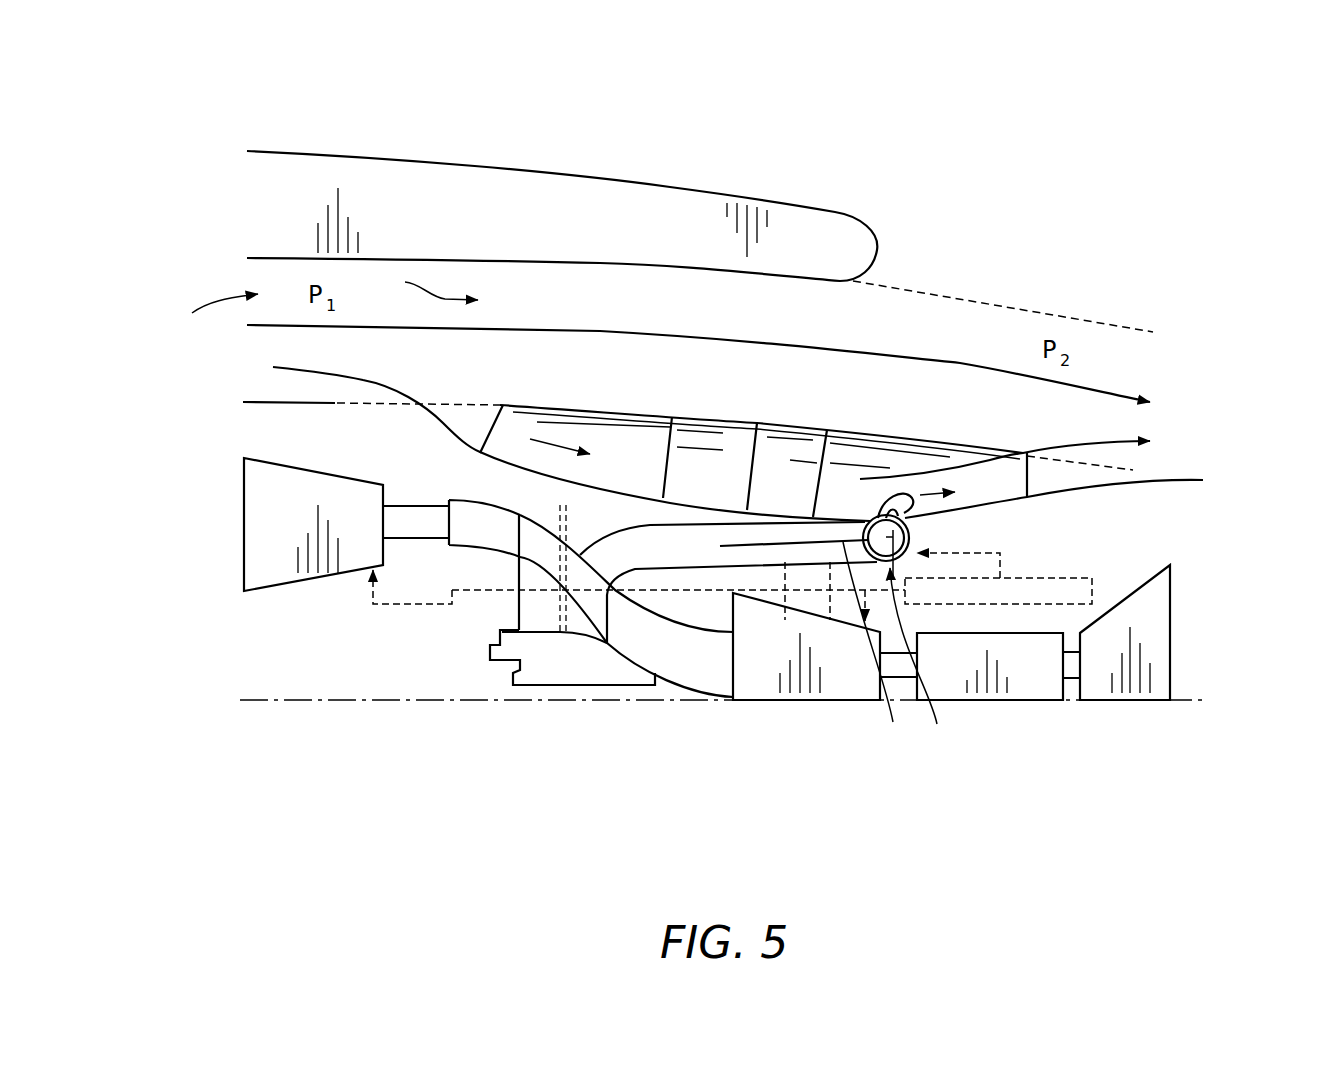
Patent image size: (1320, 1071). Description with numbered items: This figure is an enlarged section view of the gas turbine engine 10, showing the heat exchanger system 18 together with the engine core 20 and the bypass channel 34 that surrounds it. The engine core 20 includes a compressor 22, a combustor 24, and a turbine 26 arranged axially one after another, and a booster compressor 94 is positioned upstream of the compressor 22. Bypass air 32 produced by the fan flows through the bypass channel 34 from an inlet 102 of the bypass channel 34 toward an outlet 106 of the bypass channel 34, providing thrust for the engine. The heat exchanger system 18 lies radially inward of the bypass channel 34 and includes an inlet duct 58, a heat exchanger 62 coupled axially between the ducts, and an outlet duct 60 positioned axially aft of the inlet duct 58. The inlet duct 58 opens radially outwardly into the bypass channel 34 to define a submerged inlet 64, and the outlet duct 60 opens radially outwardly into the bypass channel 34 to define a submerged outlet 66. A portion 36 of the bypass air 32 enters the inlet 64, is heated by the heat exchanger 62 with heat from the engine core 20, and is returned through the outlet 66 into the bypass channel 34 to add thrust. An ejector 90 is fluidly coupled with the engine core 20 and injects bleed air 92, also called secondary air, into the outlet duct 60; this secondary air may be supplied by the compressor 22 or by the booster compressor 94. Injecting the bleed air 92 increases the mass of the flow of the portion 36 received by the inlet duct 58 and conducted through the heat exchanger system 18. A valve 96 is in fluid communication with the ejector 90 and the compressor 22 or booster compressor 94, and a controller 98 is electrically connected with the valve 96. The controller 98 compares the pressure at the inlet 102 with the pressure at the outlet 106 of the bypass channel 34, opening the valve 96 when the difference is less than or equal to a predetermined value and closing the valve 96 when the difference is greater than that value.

The gas turbine engine 10 is at (1120, 178).
The heat exchanger system 18 is at (707, 405).
The engine core 20 is at (855, 775).
The compressor 22 is at (835, 675).
The combustor 24 is at (1025, 673).
The turbine 26 is at (1127, 675).
The bypass air 32 is at (617, 330).
The bypass channel 34 is at (425, 285).
The portion of the bypass air 36 is at (366, 378).
The inlet duct 58 is at (627, 400).
The outlet duct 60 is at (935, 440).
The heat exchanger 62 is at (781, 470).
The inlet 64 is at (478, 393).
The outlet 66 is at (1140, 469).
The ejector 90 is at (924, 513).
The bleed air 92 is at (813, 646).
The booster compressor 94 is at (268, 545).
The valve 96 is at (921, 662).
The controller 98 is at (1078, 578).
The inlet of the bypass channel 102 is at (197, 311).
The outlet of the bypass channel 106 is at (1145, 370).